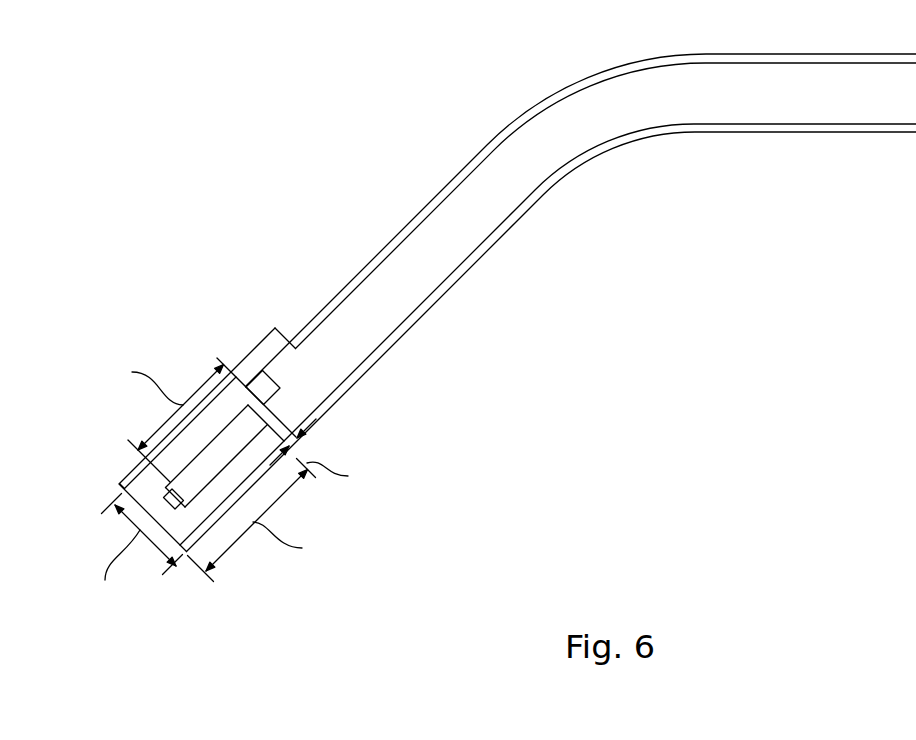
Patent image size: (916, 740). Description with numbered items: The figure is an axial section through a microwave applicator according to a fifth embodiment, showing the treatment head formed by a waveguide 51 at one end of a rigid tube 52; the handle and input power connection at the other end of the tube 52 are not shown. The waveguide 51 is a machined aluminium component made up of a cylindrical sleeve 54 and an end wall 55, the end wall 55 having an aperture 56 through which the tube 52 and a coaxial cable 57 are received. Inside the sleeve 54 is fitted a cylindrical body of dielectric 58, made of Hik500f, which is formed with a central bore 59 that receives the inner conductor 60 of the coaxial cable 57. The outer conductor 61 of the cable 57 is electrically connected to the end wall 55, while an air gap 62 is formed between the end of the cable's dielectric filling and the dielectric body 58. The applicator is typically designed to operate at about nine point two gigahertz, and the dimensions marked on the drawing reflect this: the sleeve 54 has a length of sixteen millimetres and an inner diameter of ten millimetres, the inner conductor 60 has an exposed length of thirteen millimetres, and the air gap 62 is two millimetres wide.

The waveguide 51 is at (226, 530).
The rigid tube 52 is at (490, 250).
The cylindrical sleeve 54 is at (168, 432).
The end wall 55 is at (336, 416).
The aperture 56 is at (258, 385).
The coaxial cable 57 is at (387, 296).
The cylindrical body of dielectric 58 is at (140, 483).
The central bore 59 is at (168, 500).
The inner conductor 60 is at (205, 472).
The outer conductor 61 is at (278, 403).
The air gap 62 is at (256, 403).